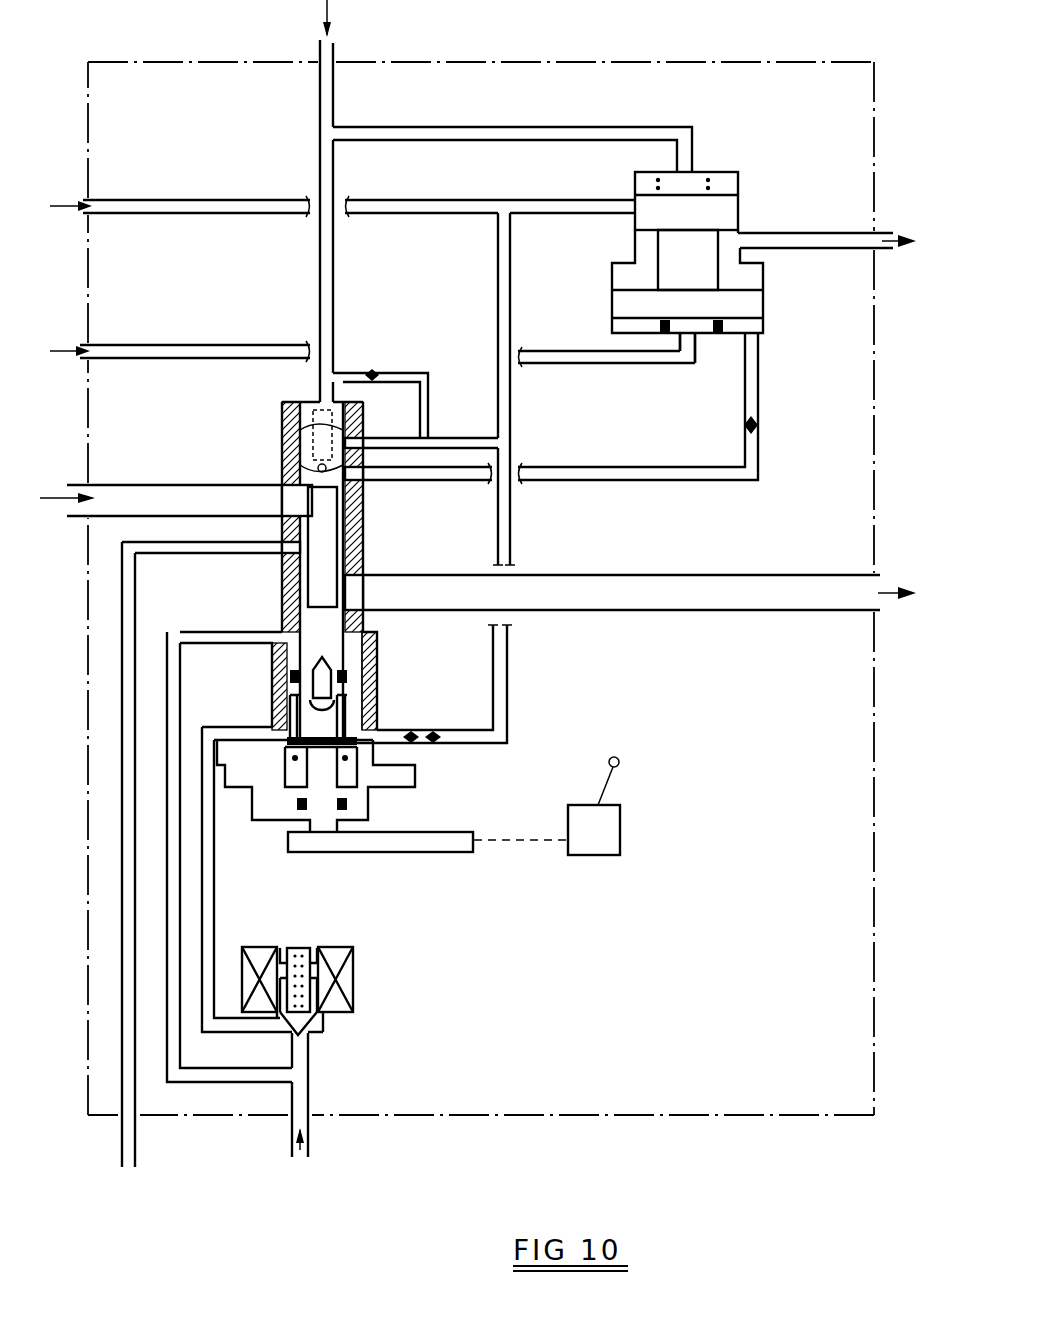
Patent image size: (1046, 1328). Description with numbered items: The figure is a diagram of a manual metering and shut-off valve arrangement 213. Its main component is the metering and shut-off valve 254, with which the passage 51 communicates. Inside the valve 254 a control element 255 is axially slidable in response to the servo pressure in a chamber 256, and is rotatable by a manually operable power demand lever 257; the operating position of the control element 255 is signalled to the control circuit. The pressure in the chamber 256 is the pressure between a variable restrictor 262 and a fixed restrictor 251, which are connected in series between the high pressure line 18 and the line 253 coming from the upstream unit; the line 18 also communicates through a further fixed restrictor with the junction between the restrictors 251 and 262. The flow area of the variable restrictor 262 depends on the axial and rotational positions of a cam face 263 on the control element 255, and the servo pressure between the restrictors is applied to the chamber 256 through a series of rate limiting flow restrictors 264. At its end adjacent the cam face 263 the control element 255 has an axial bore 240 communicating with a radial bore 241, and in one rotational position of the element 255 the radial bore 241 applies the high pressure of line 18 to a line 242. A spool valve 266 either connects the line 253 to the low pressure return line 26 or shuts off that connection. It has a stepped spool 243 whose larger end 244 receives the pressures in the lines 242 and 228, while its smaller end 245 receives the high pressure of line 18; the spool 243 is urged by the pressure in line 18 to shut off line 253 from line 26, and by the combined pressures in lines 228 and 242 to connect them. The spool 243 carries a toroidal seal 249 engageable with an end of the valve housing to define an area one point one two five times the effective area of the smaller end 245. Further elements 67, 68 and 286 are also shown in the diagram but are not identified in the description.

The high pressure line 18 is at (335, 66).
The low pressure return line 26 is at (855, 245).
The passage 51 is at (147, 497).
The outlet pressure line 67 is at (882, 612).
The pressure line 68 is at (134, 1143).
The valve arrangement 213 is at (700, 1077).
The line 228 is at (188, 356).
The axial bore 240 is at (360, 432).
The radial bore 241 is at (286, 472).
The line 242 is at (600, 475).
The stepped spool 243 is at (658, 263).
The larger end 244 is at (622, 307).
The smaller end 245 is at (652, 210).
The toroidal seal 249 is at (715, 338).
The fixed restrictor 251 is at (498, 335).
The line 253 is at (212, 208).
The metering and shut-off valve 254 is at (390, 553).
The control element 255 is at (380, 645).
The chamber 256 is at (348, 768).
The manually operable power demand lever 257 is at (612, 836).
The variable restrictor 262 is at (296, 432).
The cam face 263 is at (312, 410).
The rate limiting flow restrictors 264 is at (423, 730).
The spool valve 266 is at (728, 140).
The solenoid valve 286 is at (385, 980).